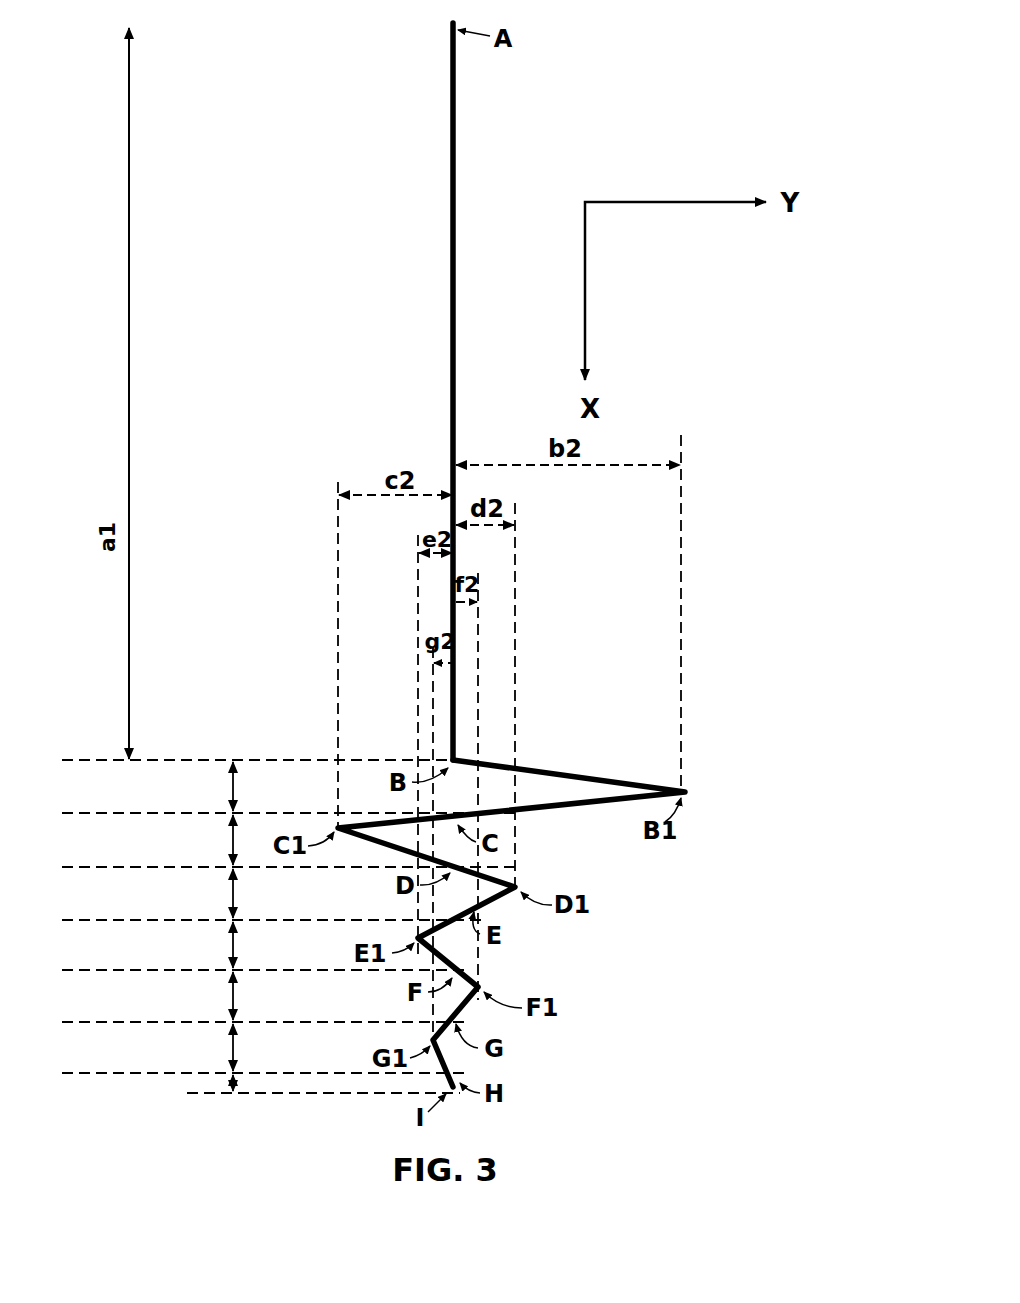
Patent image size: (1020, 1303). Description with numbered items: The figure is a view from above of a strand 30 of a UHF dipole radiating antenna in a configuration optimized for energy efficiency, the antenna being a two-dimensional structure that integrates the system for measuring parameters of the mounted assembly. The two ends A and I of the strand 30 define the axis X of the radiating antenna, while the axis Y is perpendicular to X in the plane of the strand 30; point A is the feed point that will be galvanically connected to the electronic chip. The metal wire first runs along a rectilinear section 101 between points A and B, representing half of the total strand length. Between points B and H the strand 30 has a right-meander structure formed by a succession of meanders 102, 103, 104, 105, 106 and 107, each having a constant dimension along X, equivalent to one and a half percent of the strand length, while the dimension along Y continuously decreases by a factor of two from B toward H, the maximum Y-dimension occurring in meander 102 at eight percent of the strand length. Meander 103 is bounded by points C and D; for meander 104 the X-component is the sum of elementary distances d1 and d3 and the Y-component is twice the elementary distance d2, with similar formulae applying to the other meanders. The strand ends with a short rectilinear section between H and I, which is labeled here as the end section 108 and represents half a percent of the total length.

The strand 30 is at (722, 610).
The rectilinear section 101 is at (450, 228).
The meander 102 is at (165, 767).
The meander 103 is at (165, 820).
The meander 104 is at (165, 873).
The meander 105 is at (165, 926).
The meander 106 is at (165, 976).
The meander 107 is at (165, 1028).
The end section 108 is at (449, 1086).